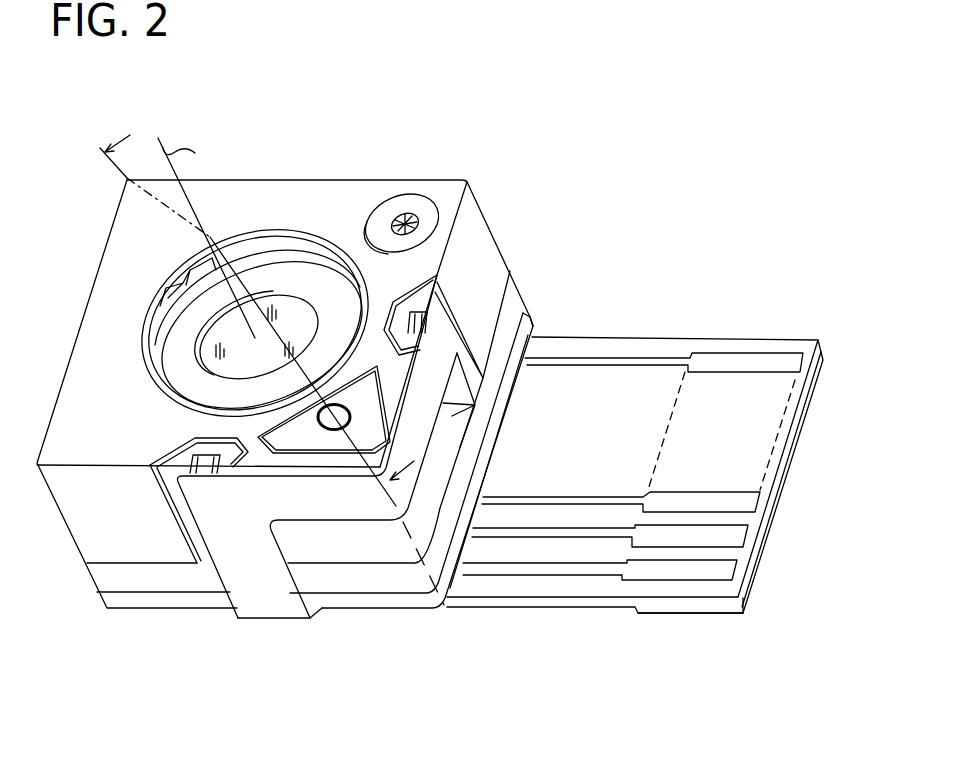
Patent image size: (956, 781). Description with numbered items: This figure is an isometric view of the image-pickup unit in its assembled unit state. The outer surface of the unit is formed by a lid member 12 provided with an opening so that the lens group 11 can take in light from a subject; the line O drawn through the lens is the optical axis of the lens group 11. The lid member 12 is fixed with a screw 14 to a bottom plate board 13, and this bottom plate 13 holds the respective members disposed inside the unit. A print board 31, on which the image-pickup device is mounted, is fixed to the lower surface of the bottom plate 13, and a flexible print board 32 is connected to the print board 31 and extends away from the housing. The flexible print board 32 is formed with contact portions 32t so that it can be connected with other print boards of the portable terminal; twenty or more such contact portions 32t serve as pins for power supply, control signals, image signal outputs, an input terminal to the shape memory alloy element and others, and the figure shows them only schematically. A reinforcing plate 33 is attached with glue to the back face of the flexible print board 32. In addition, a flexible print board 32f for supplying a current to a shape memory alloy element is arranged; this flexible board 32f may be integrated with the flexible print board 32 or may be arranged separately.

The lens group 11 is at (285, 322).
The lid member 12 is at (480, 238).
The bottom plate board 13 is at (517, 302).
The screw 14 is at (405, 216).
The print board 31 is at (533, 320).
The flexible print board 32 is at (672, 345).
The contact portions 32t is at (730, 537).
The flexible print board for shape memory alloy element 32f is at (420, 413).
The reinforcing plate 33 is at (680, 613).